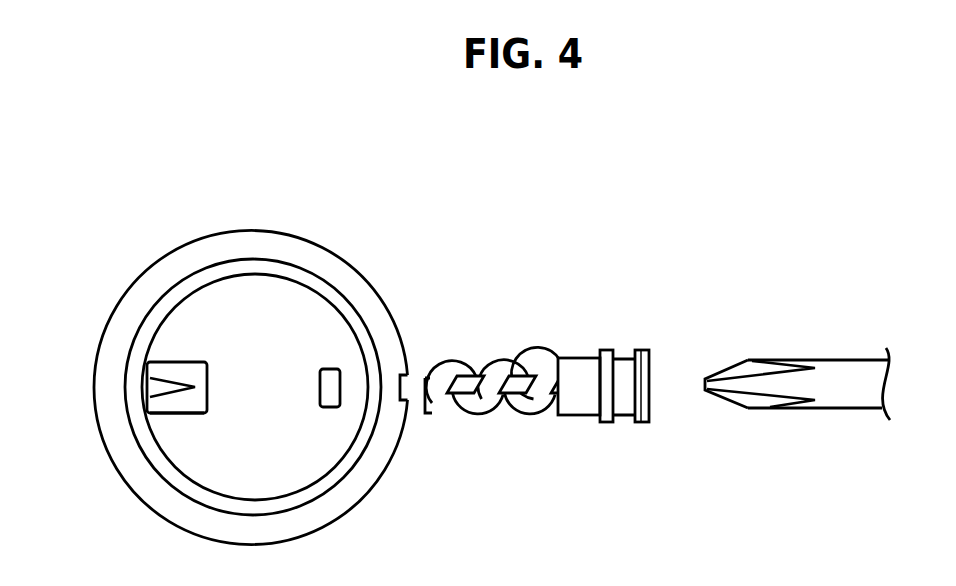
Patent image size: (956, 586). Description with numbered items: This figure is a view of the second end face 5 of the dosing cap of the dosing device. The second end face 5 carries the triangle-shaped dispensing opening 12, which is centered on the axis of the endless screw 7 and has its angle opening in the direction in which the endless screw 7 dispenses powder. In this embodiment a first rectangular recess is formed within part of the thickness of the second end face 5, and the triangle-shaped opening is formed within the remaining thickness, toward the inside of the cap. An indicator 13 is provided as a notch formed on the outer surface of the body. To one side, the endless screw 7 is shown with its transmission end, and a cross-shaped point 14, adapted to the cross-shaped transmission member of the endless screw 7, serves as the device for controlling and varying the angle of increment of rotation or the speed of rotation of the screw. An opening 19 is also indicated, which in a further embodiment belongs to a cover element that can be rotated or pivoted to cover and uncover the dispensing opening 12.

The second end face 5 is at (303, 317).
The endless screw 7 is at (502, 358).
The dispensing opening 12 is at (157, 388).
The indicator 13 is at (402, 385).
The cross-shaped point 14 is at (795, 377).
The opening 19 is at (178, 413).